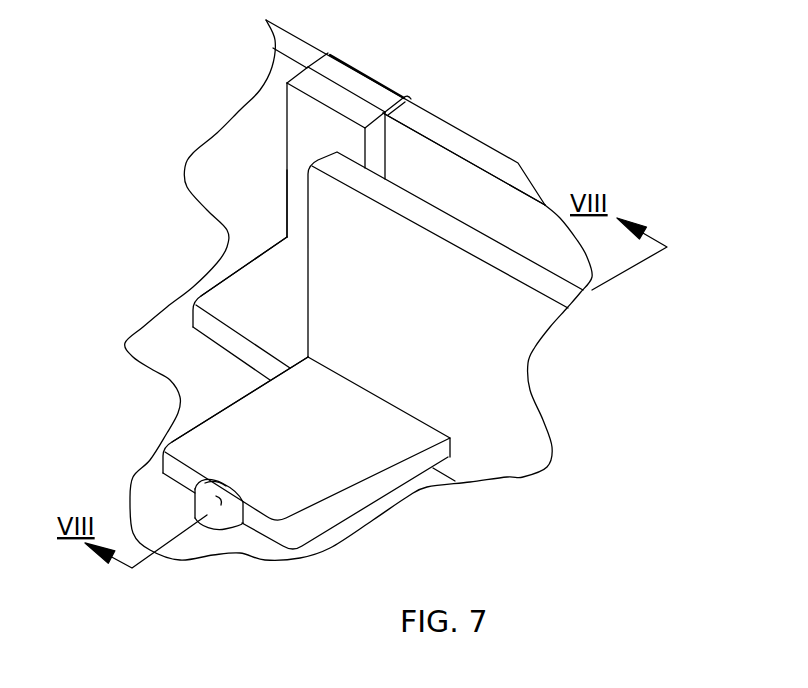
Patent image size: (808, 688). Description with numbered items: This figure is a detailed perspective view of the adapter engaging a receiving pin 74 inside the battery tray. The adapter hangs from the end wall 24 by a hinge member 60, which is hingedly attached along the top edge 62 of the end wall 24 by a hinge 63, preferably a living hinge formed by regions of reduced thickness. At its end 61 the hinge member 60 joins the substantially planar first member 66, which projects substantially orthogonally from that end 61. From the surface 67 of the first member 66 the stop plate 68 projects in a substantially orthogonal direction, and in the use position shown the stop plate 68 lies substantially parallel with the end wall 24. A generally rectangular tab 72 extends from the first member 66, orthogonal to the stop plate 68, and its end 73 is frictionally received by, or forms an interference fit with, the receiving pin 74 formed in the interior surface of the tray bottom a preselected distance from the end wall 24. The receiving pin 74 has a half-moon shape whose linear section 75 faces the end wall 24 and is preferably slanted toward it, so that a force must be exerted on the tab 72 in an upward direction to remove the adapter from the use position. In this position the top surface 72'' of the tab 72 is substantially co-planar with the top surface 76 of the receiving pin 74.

The end wall 24 is at (483, 140).
The hinge member 60 is at (300, 133).
The end 61 is at (290, 240).
The top edge 62 is at (430, 128).
The hinge 63 is at (342, 75).
The first member 66 is at (247, 262).
The surface 67 is at (241, 308).
The stop plate 68 is at (445, 295).
The tab 72 is at (306, 438).
The top surface 72'' is at (193, 399).
The end 73 is at (265, 528).
The receiving pin 74 is at (200, 488).
The linear section 75 is at (213, 492).
The top surface 76 is at (222, 502).